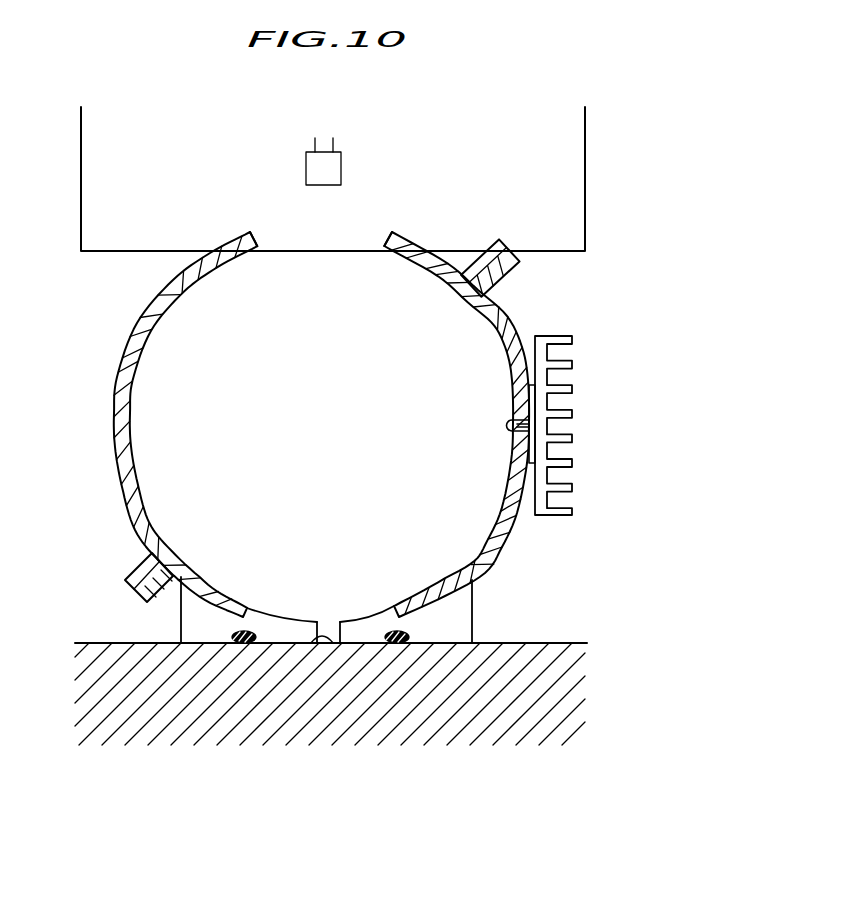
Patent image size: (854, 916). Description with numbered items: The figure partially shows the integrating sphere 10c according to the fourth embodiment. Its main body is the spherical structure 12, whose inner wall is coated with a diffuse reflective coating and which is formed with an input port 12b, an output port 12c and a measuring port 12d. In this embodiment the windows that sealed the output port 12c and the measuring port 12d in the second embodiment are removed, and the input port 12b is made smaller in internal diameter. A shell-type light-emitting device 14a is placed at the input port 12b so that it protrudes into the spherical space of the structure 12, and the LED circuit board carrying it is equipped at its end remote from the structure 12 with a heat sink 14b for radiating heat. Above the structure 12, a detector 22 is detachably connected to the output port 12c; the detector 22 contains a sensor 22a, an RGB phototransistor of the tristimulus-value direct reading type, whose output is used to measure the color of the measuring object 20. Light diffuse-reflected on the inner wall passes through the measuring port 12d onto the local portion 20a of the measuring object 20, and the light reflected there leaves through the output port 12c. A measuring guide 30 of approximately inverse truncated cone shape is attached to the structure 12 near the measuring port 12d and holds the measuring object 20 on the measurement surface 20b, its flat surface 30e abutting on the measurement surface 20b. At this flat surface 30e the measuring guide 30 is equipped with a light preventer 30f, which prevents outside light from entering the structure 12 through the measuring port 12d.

The integrating sphere 10c is at (606, 257).
The structure 12 is at (113, 371).
The input port 12b is at (512, 432).
The output port 12c is at (328, 258).
The measuring port 12d is at (328, 620).
The light-emitting device 14a is at (514, 424).
The heat sink 14b is at (553, 392).
The measuring object 20 is at (338, 715).
The measuring object 20a is at (322, 644).
The measurement surface 20b is at (536, 642).
The detector 22 is at (585, 160).
The sensor 22a is at (343, 160).
The measuring guide 30 is at (172, 628).
The flat surface 30e is at (472, 638).
The light preventer 30f is at (243, 644).